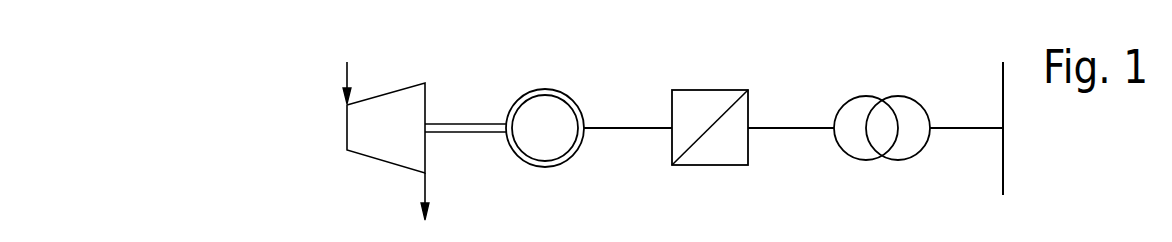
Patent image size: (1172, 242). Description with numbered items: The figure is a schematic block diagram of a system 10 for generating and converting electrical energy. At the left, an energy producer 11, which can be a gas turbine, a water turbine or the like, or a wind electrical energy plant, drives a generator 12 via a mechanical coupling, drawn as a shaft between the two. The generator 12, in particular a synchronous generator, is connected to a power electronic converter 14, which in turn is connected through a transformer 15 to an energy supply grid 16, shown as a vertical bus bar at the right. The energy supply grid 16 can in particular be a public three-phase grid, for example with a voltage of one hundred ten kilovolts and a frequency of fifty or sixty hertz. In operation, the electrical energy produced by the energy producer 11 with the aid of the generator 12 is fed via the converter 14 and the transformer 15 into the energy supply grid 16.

The system 10 is at (268, 82).
The energy producer 11 is at (394, 102).
The generator 12 is at (548, 112).
The power electronic converter 14 is at (708, 102).
The transformer 15 is at (856, 108).
The energy supply grid 16 is at (1005, 162).